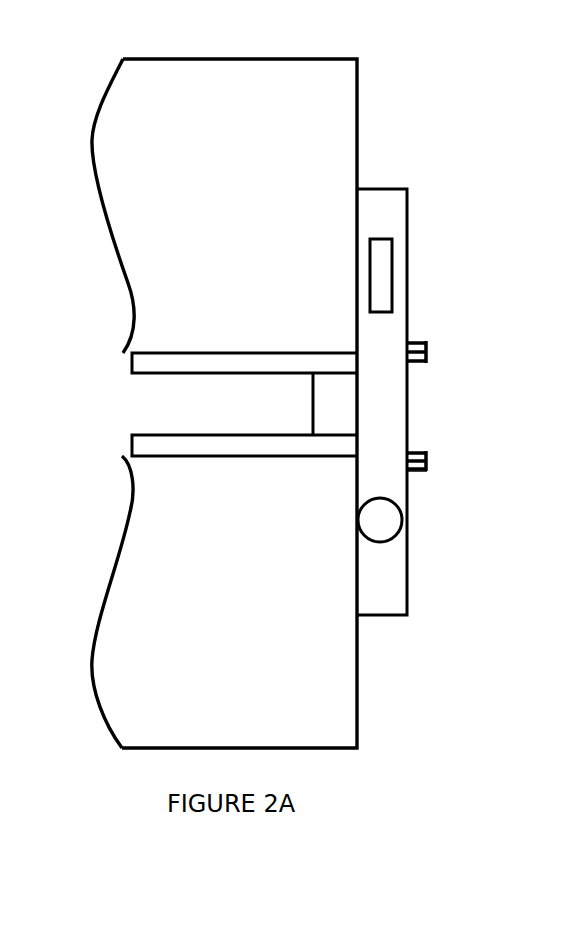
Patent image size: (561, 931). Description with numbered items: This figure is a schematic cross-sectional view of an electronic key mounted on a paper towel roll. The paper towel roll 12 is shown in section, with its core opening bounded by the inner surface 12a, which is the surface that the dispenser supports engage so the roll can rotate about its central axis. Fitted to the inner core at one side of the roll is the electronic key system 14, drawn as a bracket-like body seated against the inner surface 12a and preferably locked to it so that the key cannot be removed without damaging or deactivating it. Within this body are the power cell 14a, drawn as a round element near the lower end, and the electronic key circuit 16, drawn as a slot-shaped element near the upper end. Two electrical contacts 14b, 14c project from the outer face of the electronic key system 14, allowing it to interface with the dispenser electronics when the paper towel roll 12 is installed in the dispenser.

The paper towel roll 12 is at (224, 403).
The inner surface of paper towel roll 12a is at (130, 373).
The electronic key system 14 is at (379, 618).
The power cell 14a is at (380, 518).
The electrical contact 14b is at (427, 453).
The electrical contact 14c is at (418, 473).
The electronic key circuit 16 is at (392, 276).